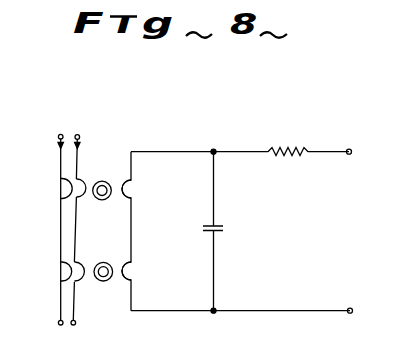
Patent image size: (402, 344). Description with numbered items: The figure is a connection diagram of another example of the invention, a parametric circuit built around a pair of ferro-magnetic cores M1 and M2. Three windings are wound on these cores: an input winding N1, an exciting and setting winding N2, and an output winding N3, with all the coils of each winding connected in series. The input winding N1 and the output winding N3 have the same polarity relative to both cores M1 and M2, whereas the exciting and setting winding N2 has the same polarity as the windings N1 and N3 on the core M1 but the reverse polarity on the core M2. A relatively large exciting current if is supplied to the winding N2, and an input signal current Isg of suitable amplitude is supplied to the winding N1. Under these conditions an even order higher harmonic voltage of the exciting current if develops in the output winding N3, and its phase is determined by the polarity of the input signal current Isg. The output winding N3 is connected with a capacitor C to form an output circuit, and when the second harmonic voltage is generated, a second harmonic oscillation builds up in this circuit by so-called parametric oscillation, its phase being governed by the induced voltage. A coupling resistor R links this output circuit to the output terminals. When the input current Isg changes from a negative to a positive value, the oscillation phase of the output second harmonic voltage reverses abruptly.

The input signal current Isg is at (47, 221).
The exciting current if is at (81, 221).
The input winding N1 is at (57, 230).
The exciting and setting winding N2 is at (89, 230).
The output winding N3 is at (124, 230).
The ferro-magnetic core M1 is at (107, 178).
The ferro-magnetic core M2 is at (107, 260).
The capacitor C is at (222, 231).
The coupling resistor R is at (288, 138).